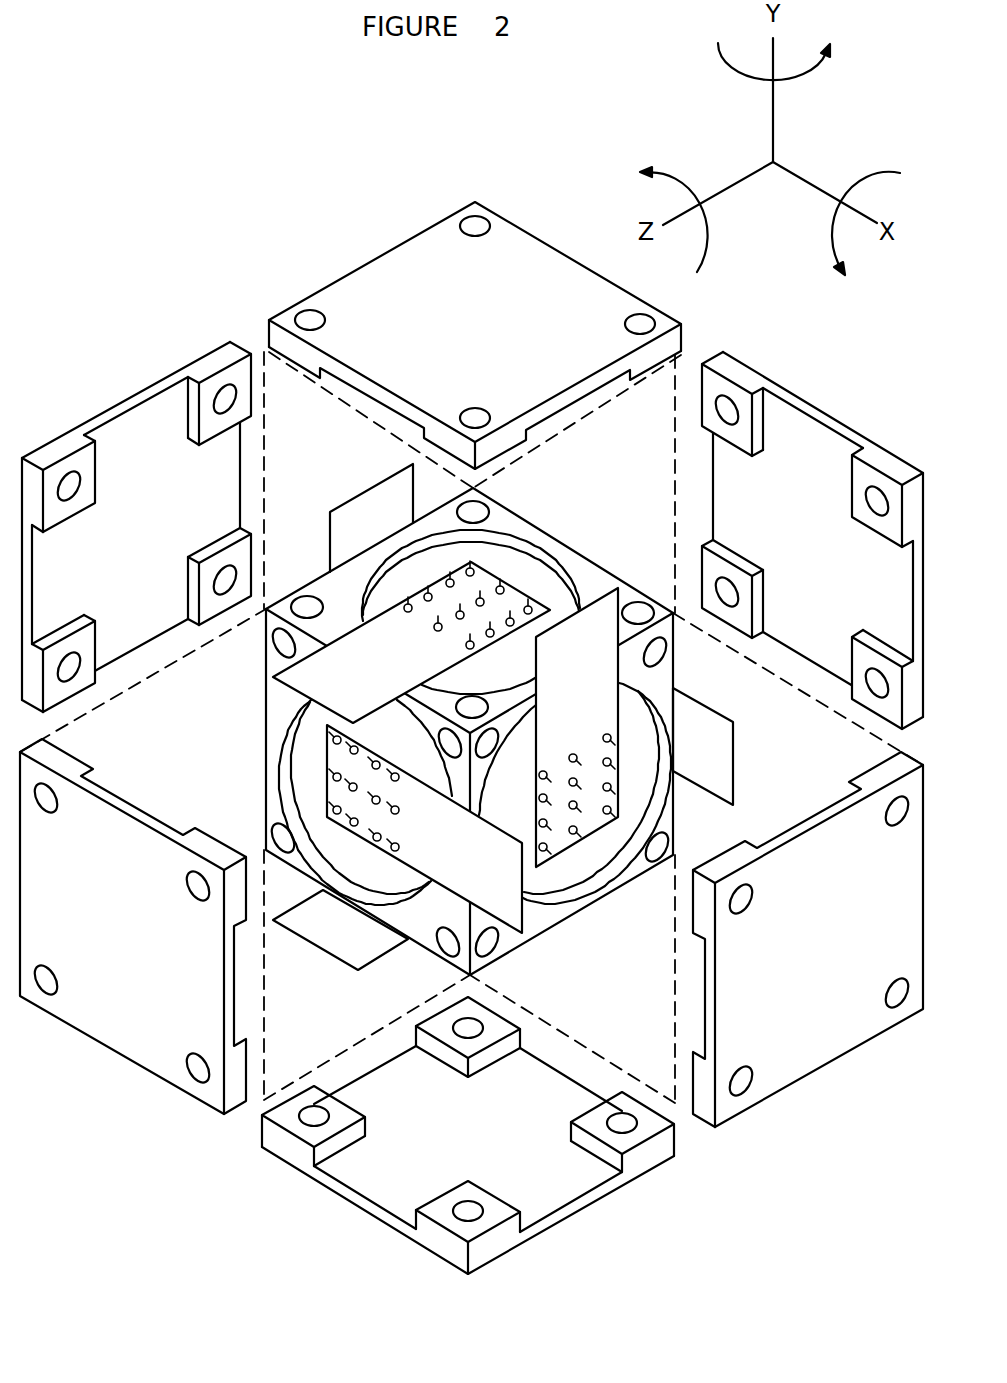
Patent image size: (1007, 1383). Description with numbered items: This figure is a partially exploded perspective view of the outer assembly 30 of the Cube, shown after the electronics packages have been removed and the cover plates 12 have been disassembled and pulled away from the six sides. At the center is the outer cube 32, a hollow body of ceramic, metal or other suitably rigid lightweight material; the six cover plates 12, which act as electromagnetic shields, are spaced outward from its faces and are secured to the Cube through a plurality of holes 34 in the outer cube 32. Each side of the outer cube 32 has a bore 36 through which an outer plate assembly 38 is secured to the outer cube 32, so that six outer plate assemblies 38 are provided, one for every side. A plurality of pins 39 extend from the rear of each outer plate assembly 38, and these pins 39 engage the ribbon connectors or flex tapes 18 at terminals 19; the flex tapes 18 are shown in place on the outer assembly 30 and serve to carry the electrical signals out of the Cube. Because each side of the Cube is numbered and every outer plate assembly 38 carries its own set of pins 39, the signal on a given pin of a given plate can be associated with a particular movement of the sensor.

The cover plate 12 is at (471, 735).
The flex tape 18 is at (511, 780).
The terminal 19 is at (281, 763).
The outer assembly 30 is at (345, 492).
The outer cube 32 is at (469, 717).
The hole 34 is at (689, 659).
The bore 36 is at (475, 692).
The outer plate assembly 38 is at (488, 699).
The pin 39 is at (272, 727).